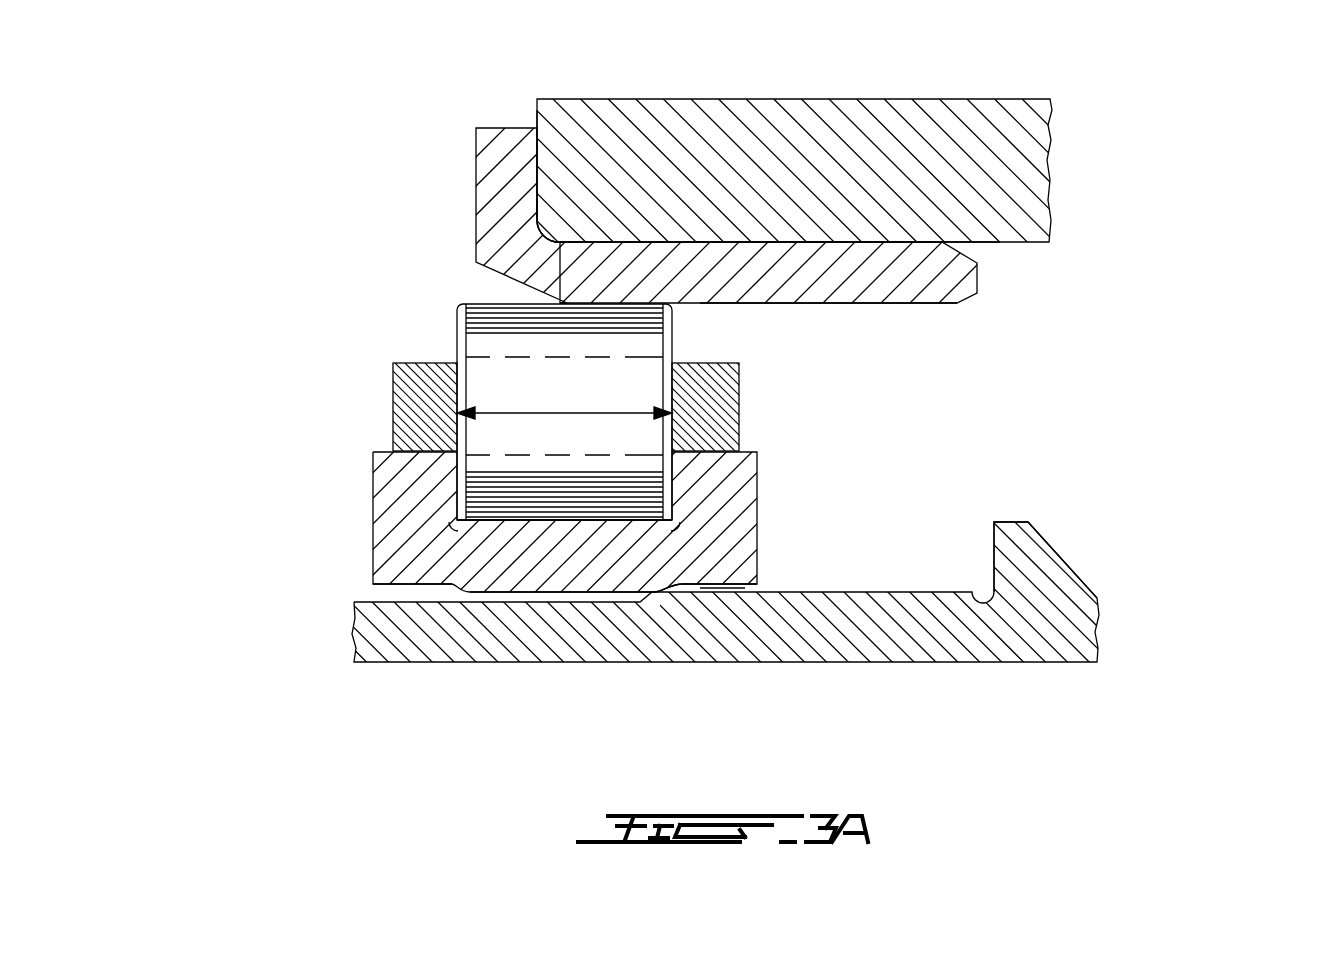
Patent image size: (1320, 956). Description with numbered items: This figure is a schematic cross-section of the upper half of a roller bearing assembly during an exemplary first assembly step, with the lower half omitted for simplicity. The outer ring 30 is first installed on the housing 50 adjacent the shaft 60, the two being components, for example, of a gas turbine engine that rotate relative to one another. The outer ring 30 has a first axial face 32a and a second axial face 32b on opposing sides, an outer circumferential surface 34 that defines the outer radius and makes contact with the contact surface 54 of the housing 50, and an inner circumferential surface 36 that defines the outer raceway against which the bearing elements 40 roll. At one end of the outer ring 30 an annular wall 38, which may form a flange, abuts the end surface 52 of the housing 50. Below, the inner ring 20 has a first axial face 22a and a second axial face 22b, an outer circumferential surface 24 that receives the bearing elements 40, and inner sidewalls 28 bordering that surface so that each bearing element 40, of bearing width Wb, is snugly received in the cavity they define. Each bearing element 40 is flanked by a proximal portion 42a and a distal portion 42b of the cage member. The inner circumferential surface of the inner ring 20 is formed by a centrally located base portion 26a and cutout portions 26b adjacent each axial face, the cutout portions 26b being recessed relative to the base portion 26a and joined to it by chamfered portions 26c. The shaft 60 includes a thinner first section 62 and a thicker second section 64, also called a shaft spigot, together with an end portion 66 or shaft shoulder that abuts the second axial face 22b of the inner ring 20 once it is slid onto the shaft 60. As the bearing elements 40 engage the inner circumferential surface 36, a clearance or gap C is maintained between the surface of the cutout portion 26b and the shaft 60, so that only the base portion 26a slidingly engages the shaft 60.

The inner ring 20 is at (538, 594).
The first axial face 22a is at (375, 526).
The second axial face 22b is at (758, 520).
The outer circumferential surface 24 is at (612, 522).
The base portion 26a is at (535, 594).
The cutout portion 26b is at (400, 586).
The chamfered portion 26c is at (673, 592).
The inner sidewall 28 is at (452, 485).
The outer ring 30 is at (713, 218).
The first axial face 32a is at (476, 228).
The second axial face 32b is at (977, 280).
The outer circumferential surface 34 is at (945, 243).
The inner circumferential surface 36 is at (905, 305).
The wall 38 is at (535, 205).
The bearing element 40 is at (493, 366).
The proximal portion 42a is at (420, 399).
The distal portion 42b is at (700, 405).
The housing 50 is at (1076, 162).
The end surface 52 is at (540, 150).
The contact surface 54 is at (735, 240).
The shaft 60 is at (748, 630).
The first section 62 is at (452, 630).
The second section 64 is at (848, 620).
The end portion 66 is at (1000, 566).
The clearance C is at (745, 588).